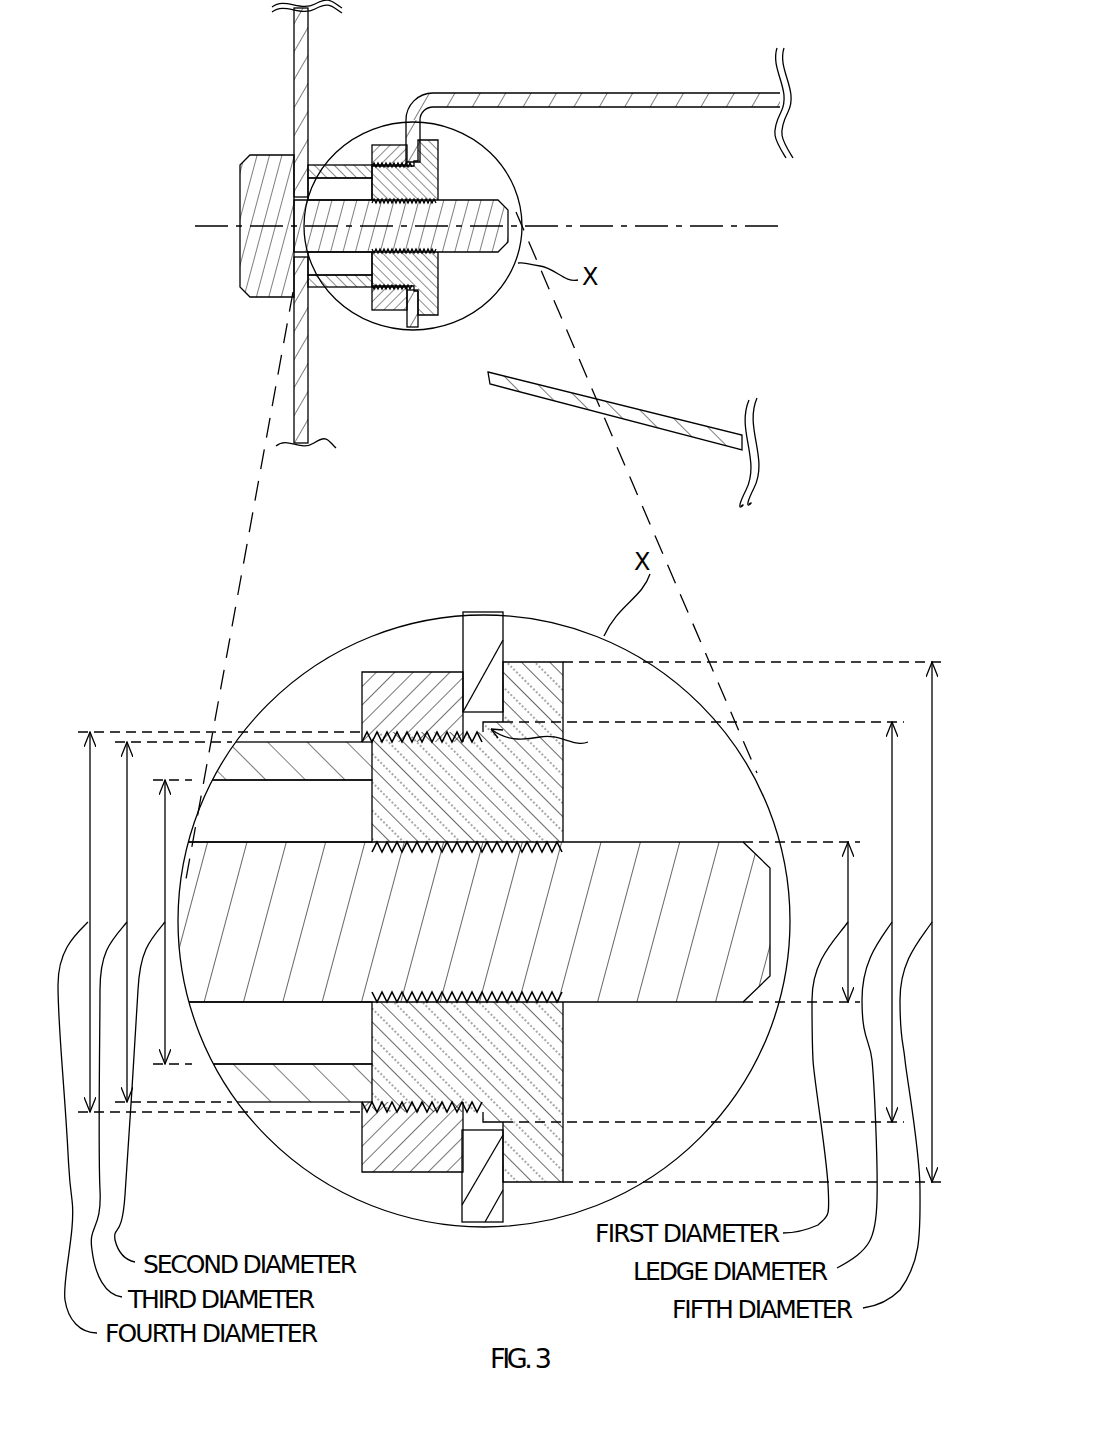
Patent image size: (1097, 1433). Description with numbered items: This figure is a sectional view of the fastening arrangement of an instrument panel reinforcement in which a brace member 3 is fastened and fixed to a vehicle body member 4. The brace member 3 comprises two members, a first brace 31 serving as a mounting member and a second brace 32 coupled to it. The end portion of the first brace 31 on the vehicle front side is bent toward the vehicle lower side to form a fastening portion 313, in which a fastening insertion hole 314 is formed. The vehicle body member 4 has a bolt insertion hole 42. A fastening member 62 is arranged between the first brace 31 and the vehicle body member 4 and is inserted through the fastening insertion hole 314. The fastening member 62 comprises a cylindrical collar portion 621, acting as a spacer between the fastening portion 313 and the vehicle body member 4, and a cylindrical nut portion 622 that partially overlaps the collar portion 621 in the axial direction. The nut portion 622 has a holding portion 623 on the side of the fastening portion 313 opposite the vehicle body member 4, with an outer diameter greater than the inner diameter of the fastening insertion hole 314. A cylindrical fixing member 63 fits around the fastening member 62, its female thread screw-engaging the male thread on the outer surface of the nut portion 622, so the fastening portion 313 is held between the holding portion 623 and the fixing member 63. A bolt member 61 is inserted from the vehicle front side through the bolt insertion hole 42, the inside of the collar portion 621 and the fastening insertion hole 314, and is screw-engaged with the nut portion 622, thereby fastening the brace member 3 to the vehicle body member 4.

The brace member 3 is at (694, 90).
The first brace 31 is at (560, 100).
The fastening portion 313 is at (411, 134).
The fastening insertion hole 314 is at (396, 284).
The second brace 32 is at (580, 404).
The vehicle body member 4 is at (298, 62).
The bolt insertion hole 42 is at (294, 246).
The bolt member 61 is at (267, 188).
The fastening member 62 is at (408, 275).
The collar portion 621 is at (343, 281).
The nut portion 622 is at (400, 187).
The holding portion 623 is at (432, 156).
The fixing member 63 is at (388, 145).